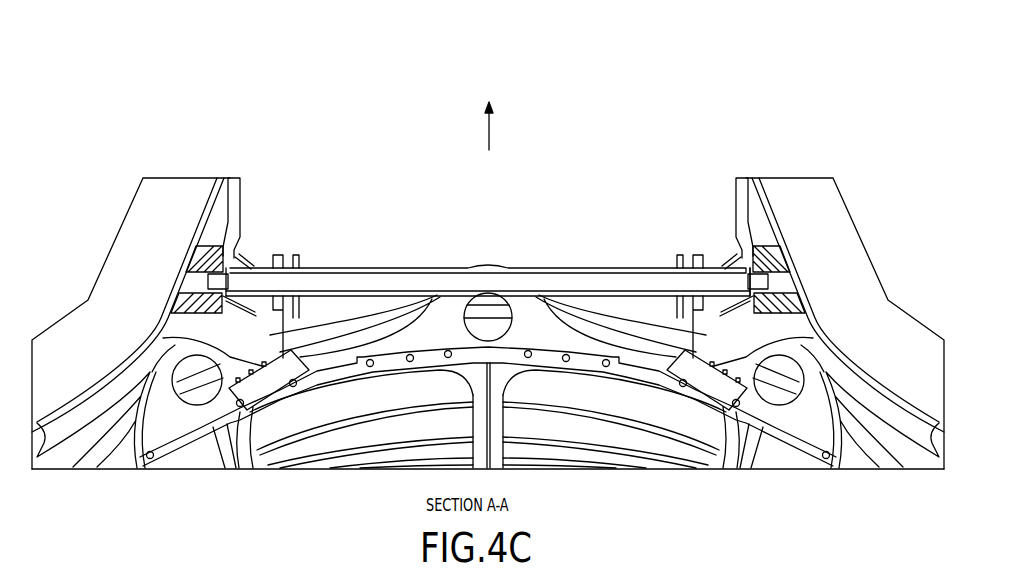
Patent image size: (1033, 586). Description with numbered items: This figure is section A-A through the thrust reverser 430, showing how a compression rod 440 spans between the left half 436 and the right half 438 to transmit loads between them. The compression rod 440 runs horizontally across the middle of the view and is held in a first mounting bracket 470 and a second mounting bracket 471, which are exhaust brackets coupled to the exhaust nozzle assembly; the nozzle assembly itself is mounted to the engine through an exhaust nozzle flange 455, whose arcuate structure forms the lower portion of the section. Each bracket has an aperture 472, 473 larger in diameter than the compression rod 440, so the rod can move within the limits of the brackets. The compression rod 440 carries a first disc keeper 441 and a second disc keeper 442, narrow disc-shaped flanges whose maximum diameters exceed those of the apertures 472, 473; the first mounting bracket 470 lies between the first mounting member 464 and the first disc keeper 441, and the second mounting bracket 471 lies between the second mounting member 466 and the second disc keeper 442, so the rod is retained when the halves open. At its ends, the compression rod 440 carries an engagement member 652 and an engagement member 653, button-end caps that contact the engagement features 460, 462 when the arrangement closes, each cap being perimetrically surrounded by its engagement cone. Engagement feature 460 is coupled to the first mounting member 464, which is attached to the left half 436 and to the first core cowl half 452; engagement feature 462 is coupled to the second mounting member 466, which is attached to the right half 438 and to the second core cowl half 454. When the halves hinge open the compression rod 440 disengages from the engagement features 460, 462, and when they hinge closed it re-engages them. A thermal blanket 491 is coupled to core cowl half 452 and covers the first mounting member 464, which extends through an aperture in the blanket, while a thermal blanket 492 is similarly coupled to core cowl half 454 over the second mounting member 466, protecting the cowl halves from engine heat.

The thrust reverser 430 is at (638, 101).
The left half 436 is at (134, 241).
The right half 438 is at (847, 240).
The compression rod 440 is at (583, 280).
The first disc keeper 441 is at (298, 257).
The second disc keeper 442 is at (678, 258).
The first core cowl half 452 is at (177, 288).
The second core cowl half 454 is at (793, 290).
The exhaust nozzle flange 455 is at (507, 353).
The engagement feature 460 is at (248, 258).
The engagement feature 462 is at (728, 258).
The first mounting member 464 is at (200, 262).
The second mounting member 466 is at (783, 257).
The first mounting bracket 470 is at (282, 254).
The second mounting bracket 471 is at (694, 254).
The aperture 472 is at (277, 307).
The aperture 473 is at (700, 307).
The thermal blanket 491 is at (184, 332).
The thermal blanket 492 is at (800, 330).
The engagement member 652 is at (236, 262).
The engagement member 653 is at (741, 268).